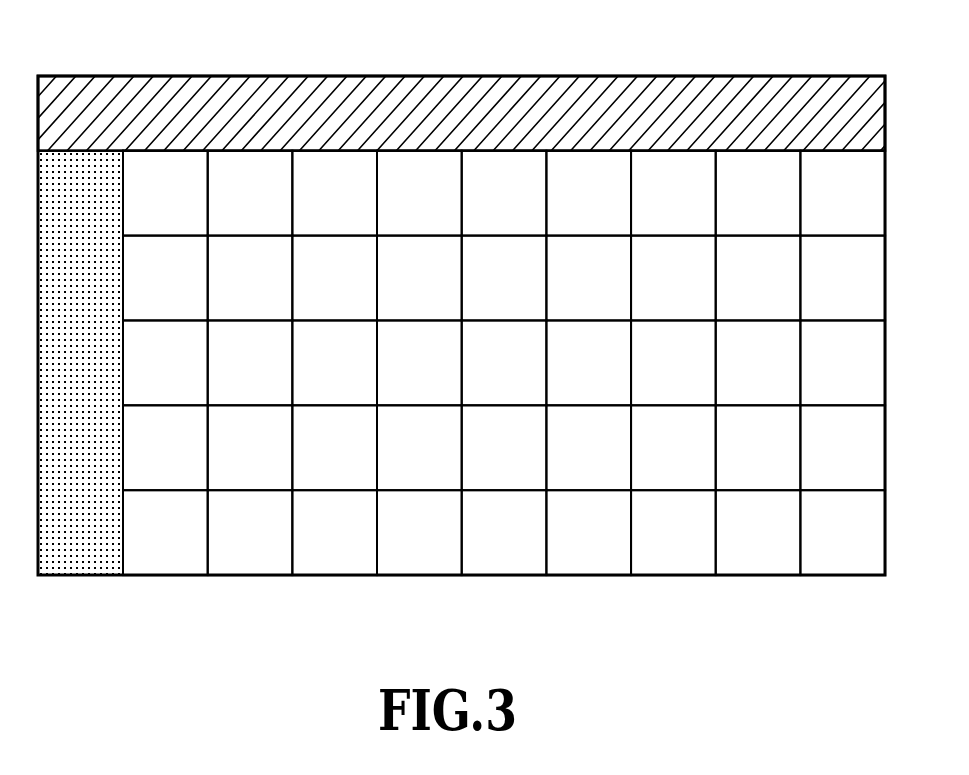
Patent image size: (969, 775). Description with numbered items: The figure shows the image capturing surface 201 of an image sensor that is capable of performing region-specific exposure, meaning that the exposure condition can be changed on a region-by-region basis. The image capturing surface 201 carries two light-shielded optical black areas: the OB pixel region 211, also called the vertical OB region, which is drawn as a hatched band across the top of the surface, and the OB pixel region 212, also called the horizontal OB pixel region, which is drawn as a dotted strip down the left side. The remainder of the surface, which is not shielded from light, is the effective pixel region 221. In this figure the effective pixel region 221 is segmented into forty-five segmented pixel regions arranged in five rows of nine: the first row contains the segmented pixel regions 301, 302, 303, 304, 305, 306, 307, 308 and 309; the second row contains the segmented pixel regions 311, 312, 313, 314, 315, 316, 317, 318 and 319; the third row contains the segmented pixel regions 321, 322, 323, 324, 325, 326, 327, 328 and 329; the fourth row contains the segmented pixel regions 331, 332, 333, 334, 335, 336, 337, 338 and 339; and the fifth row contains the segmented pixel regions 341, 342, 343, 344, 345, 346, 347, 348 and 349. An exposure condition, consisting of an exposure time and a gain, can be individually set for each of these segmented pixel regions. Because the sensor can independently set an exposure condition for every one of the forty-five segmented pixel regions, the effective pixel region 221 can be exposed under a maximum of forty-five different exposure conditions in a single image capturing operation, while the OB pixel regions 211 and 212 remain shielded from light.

The image capturing surface 201 is at (696, 77).
The OB pixel region 211 is at (264, 90).
The OB pixel region 212 is at (85, 563).
The effective pixel region 221 is at (815, 563).
The segmented pixel region 301 is at (165, 193).
The segmented pixel region 302 is at (250, 193).
The segmented pixel region 303 is at (334, 193).
The segmented pixel region 304 is at (419, 193).
The segmented pixel region 305 is at (504, 193).
The segmented pixel region 306 is at (588, 193).
The segmented pixel region 307 is at (673, 193).
The segmented pixel region 308 is at (758, 193).
The segmented pixel region 309 is at (842, 193).
The segmented pixel region 311 is at (165, 278).
The segmented pixel region 312 is at (250, 278).
The segmented pixel region 313 is at (334, 278).
The segmented pixel region 314 is at (419, 278).
The segmented pixel region 315 is at (504, 278).
The segmented pixel region 316 is at (588, 278).
The segmented pixel region 317 is at (673, 278).
The segmented pixel region 318 is at (758, 278).
The segmented pixel region 319 is at (842, 278).
The segmented pixel region 321 is at (165, 362).
The segmented pixel region 322 is at (250, 362).
The segmented pixel region 323 is at (334, 362).
The segmented pixel region 324 is at (419, 362).
The segmented pixel region 325 is at (504, 362).
The segmented pixel region 326 is at (588, 362).
The segmented pixel region 327 is at (673, 362).
The segmented pixel region 328 is at (758, 362).
The segmented pixel region 329 is at (842, 362).
The segmented pixel region 331 is at (165, 447).
The segmented pixel region 332 is at (250, 447).
The segmented pixel region 333 is at (334, 447).
The segmented pixel region 334 is at (419, 447).
The segmented pixel region 335 is at (504, 447).
The segmented pixel region 336 is at (588, 447).
The segmented pixel region 337 is at (673, 447).
The segmented pixel region 338 is at (758, 447).
The segmented pixel region 339 is at (842, 447).
The segmented pixel region 341 is at (165, 532).
The segmented pixel region 342 is at (250, 532).
The segmented pixel region 343 is at (334, 532).
The segmented pixel region 344 is at (419, 532).
The segmented pixel region 345 is at (504, 532).
The segmented pixel region 346 is at (588, 532).
The segmented pixel region 347 is at (673, 532).
The segmented pixel region 348 is at (758, 532).
The segmented pixel region 349 is at (842, 532).